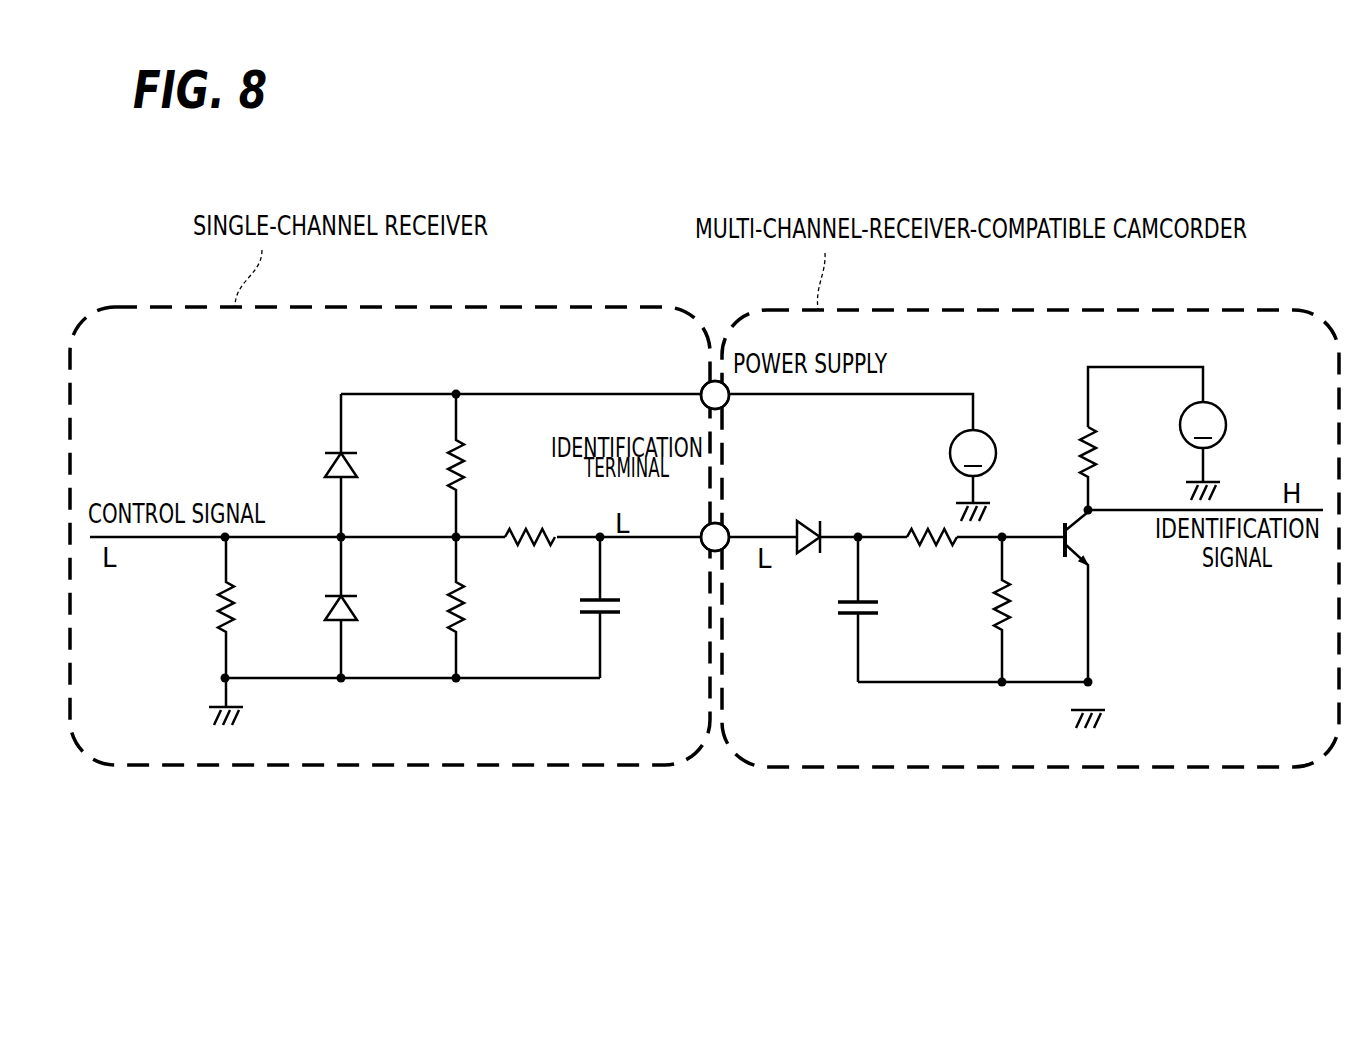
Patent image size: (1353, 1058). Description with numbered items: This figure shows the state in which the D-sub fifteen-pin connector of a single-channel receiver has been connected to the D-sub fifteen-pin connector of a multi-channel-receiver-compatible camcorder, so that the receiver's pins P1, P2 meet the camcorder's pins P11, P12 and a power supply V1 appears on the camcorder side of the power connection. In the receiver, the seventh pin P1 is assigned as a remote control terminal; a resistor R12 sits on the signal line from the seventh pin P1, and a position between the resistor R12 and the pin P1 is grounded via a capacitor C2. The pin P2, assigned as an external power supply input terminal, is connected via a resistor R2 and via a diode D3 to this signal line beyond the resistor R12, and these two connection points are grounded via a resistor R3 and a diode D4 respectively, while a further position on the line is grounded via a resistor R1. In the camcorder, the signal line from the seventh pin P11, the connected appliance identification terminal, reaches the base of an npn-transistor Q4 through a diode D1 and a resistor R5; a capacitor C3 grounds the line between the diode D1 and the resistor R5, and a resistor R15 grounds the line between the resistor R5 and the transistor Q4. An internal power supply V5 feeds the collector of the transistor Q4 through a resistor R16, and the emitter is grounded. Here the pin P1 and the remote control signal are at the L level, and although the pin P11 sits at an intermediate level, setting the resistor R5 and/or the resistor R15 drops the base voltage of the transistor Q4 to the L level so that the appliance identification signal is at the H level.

The resistor R1 is at (245, 622).
The resistor R2 is at (478, 465).
The resistor R3 is at (475, 607).
The resistor R12 is at (530, 519).
The diode D3 is at (361, 465).
The diode D4 is at (361, 607).
The capacitor C2 is at (618, 607).
The seventh pin P1 is at (702, 530).
The pin P2 is at (702, 388).
The seventh pin P11 is at (726, 548).
The power supply terminal of camcorder P12 is at (727, 404).
The diode D1 is at (810, 521).
The resistor R5 is at (932, 556).
The capacitor C3 is at (877, 609).
The resistor R15 is at (1029, 609).
The npn-transistor Q4 is at (1092, 597).
The resistor R16 is at (1114, 468).
The voltage source V1 is at (995, 460).
The internal power supply V5 is at (1225, 436).